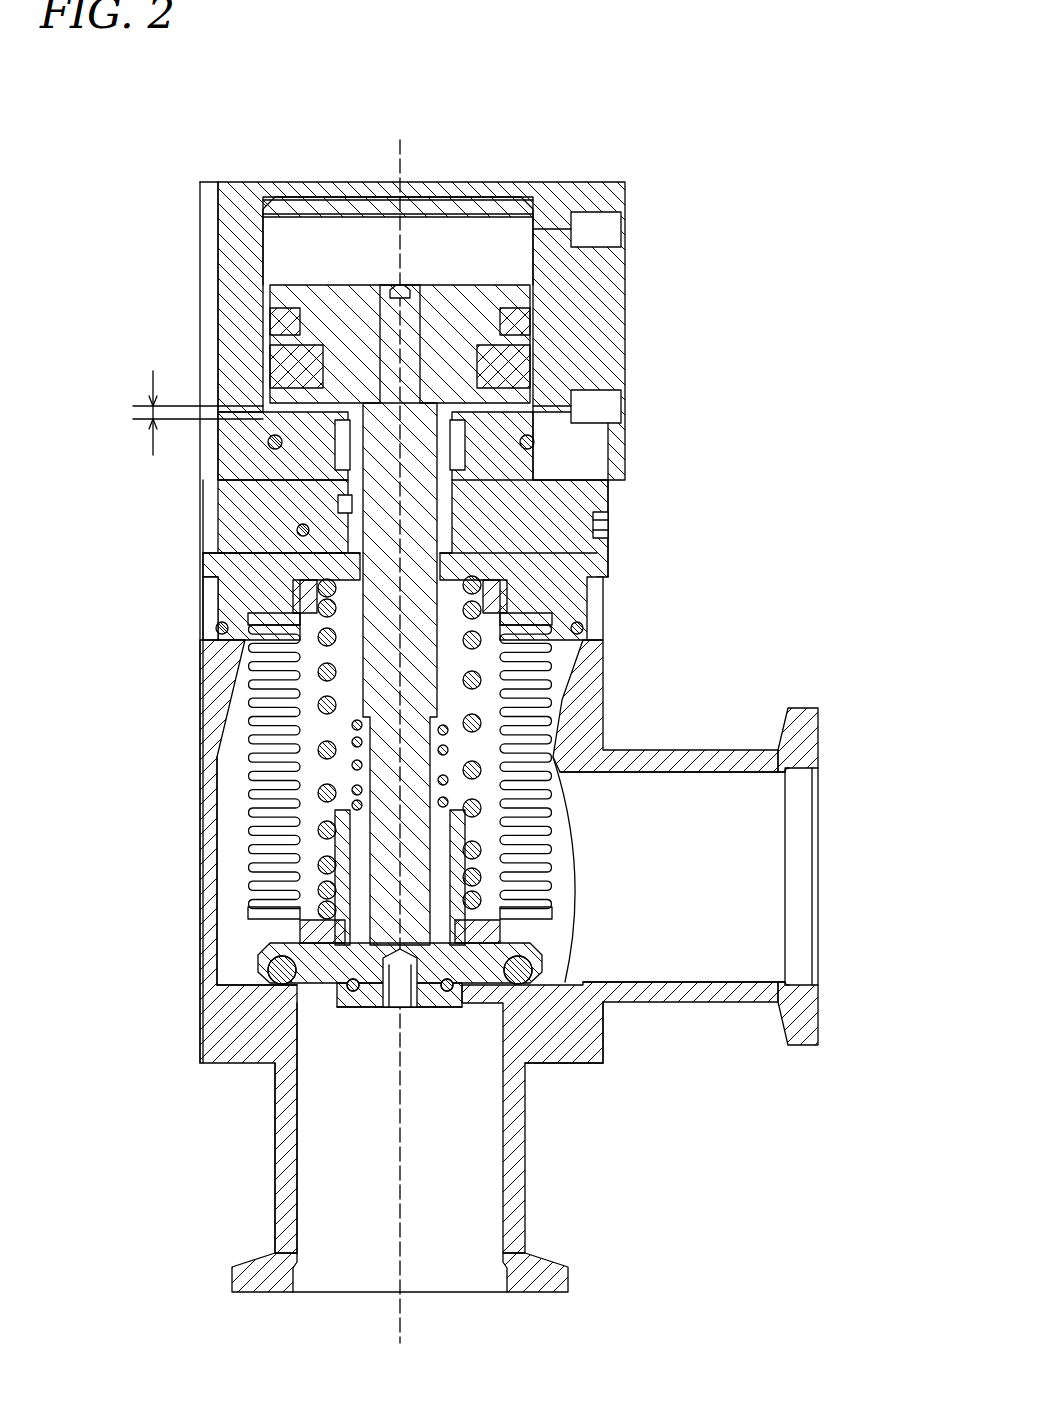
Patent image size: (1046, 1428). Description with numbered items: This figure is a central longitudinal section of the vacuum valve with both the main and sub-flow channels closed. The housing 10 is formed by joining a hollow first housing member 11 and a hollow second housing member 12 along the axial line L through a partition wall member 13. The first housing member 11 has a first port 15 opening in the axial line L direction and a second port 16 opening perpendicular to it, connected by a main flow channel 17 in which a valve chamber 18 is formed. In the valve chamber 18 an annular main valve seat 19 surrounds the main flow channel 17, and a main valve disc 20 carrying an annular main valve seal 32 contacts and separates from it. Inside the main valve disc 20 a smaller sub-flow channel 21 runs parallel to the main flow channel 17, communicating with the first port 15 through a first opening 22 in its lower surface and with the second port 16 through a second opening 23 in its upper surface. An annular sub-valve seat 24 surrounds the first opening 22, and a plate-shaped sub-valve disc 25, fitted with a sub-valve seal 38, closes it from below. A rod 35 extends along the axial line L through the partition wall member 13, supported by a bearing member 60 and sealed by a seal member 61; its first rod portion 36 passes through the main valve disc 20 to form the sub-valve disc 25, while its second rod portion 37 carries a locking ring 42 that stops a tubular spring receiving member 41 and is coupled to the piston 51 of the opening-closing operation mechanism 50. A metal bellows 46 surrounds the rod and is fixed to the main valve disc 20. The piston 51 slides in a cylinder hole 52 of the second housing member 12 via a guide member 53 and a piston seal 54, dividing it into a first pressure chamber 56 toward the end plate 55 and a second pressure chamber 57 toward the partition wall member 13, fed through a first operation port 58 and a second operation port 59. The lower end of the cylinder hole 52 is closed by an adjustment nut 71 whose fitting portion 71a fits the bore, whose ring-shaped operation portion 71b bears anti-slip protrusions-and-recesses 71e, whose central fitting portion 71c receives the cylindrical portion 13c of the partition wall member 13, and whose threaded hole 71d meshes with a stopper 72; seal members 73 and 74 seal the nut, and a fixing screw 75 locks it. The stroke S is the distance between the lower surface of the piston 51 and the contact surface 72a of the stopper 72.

The housing 10 is at (230, 140).
The first housing member 11 is at (213, 800).
The second housing member 12 is at (238, 240).
The partition wall member 13 is at (245, 645).
The cylindrical portion 13c is at (600, 490).
The first port 15 is at (450, 1285).
The second port 16 is at (800, 840).
The main flow channel 17 is at (707, 915).
The valve chamber 18 is at (233, 837).
The main valve seat 19 is at (283, 990).
The main valve disc 20 is at (236, 941).
The sub-flow channel 21 is at (500, 1000).
The first opening 22 is at (450, 1010).
The second opening 23 is at (580, 1020).
The sub-valve seat 24 is at (280, 1070).
The sub-valve disc 25 is at (355, 990).
The main valve seal 32 is at (283, 973).
The rod 35 is at (555, 685).
The first rod portion 36 is at (432, 895).
The second rod portion 37 is at (320, 670).
The sub-valve seal 38 is at (385, 1000).
The spring receiving member 41 is at (470, 853).
The locking ring 42 is at (490, 830).
The bellows 46 is at (257, 725).
The opening-closing operation mechanism 50 is at (596, 158).
The piston 51 is at (295, 305).
The cylinder hole 52 is at (270, 243).
The guide member 53 is at (290, 365).
The piston seal 54 is at (282, 320).
The end plate 55 is at (490, 215).
The first pressure chamber 56 is at (430, 243).
The second pressure chamber 57 is at (520, 368).
The first operation port 58 is at (610, 232).
The second operation port 59 is at (610, 407).
The bearing member 60 is at (580, 628).
The seal member 61 is at (560, 595).
The adjustment nut 71 is at (88, 455).
The fitting portion 71a is at (235, 445).
The operation portion 71b is at (290, 540).
The fitting portion 71c is at (300, 505).
The threaded hole 71d is at (270, 610).
The protrusions-and-recesses 71e is at (240, 590).
The stopper 72 is at (470, 433).
The contact surface 72a is at (525, 330).
The seal member 73 is at (530, 452).
The seal member 74 is at (555, 560).
The fixing screw 75 is at (600, 525).
The axial line L is at (401, 720).
The stroke S is at (192, 413).